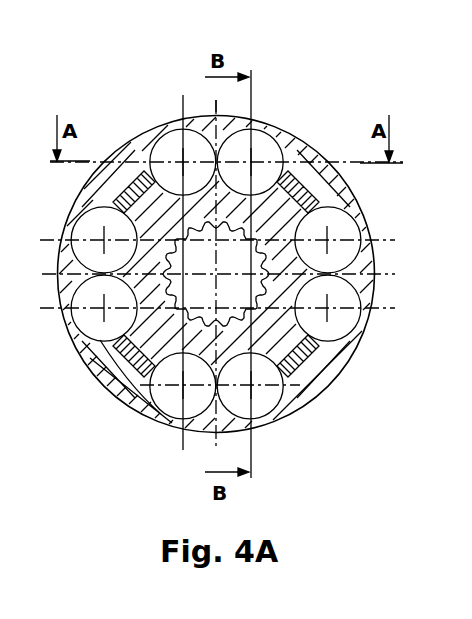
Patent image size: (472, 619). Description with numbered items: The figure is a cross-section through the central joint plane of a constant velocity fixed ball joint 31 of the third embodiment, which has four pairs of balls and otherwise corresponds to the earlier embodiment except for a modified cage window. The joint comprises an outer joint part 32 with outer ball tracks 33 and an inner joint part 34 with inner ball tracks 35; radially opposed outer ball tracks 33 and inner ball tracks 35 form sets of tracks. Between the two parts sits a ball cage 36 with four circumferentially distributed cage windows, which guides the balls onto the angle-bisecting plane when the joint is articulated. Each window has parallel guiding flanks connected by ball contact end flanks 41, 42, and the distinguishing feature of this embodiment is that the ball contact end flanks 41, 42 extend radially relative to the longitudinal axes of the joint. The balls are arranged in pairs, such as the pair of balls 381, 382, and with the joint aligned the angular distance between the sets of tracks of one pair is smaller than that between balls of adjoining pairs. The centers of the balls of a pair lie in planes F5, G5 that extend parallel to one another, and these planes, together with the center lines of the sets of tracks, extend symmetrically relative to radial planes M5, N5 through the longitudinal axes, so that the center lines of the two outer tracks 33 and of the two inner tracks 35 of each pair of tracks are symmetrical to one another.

The constant velocity fixed ball joint 31 is at (355, 82).
The outer joint part 32 is at (340, 182).
The outer ball tracks 33 is at (168, 423).
The inner joint part 34 is at (297, 218).
The inner ball tracks 35 is at (207, 418).
The ball cage 36 is at (333, 352).
The first ball of a pair of balls 381 is at (150, 152).
The second ball of a pair of balls 382 is at (268, 148).
The ball contact end flank 41 is at (152, 405).
The ball contact end flank 42 is at (280, 397).
The radial plane N5 is at (60, 298).
The ball-center plane F5 is at (182, 100).
The radial plane M5 is at (213, 103).
The ball-center plane G5 is at (252, 100).